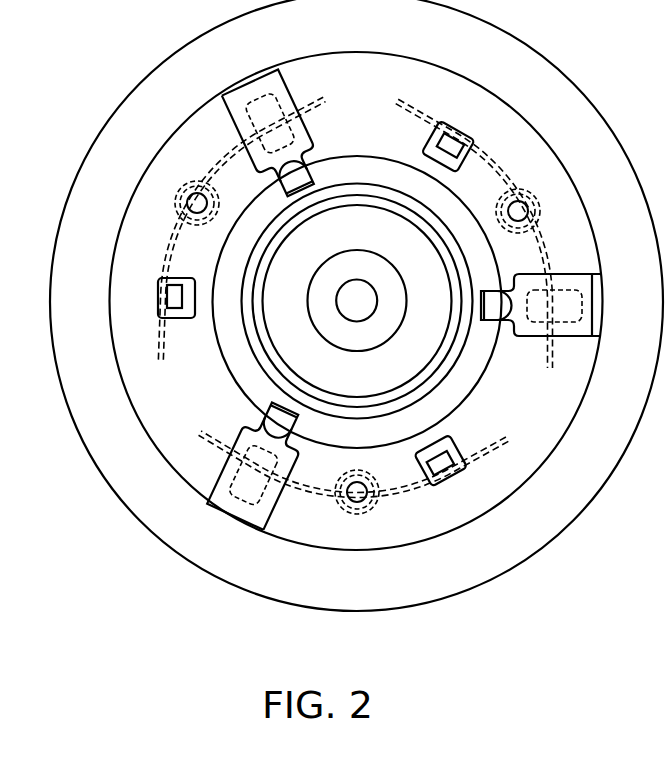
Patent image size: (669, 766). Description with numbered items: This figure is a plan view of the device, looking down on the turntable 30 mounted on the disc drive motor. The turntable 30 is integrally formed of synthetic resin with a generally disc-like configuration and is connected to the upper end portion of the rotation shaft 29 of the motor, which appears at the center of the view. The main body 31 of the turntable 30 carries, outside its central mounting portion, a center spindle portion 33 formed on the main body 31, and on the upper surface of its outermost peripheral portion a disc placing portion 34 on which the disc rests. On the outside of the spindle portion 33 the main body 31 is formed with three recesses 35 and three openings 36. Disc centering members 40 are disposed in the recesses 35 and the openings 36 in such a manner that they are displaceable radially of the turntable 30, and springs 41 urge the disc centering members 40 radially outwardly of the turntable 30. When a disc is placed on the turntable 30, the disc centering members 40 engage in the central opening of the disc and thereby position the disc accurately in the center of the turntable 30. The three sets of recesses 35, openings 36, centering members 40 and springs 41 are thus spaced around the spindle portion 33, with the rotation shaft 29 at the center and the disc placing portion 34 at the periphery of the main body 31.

The rotation shaft 29 is at (368, 317).
The turntable 30 is at (126, 98).
The main body 31 is at (153, 197).
The center spindle portion 33 is at (226, 287).
The disc placing portion 34 is at (85, 215).
The recess 35 is at (257, 78).
The opening 36 is at (288, 128).
The disc centering member 40 is at (253, 165).
The spring 41 is at (172, 232).